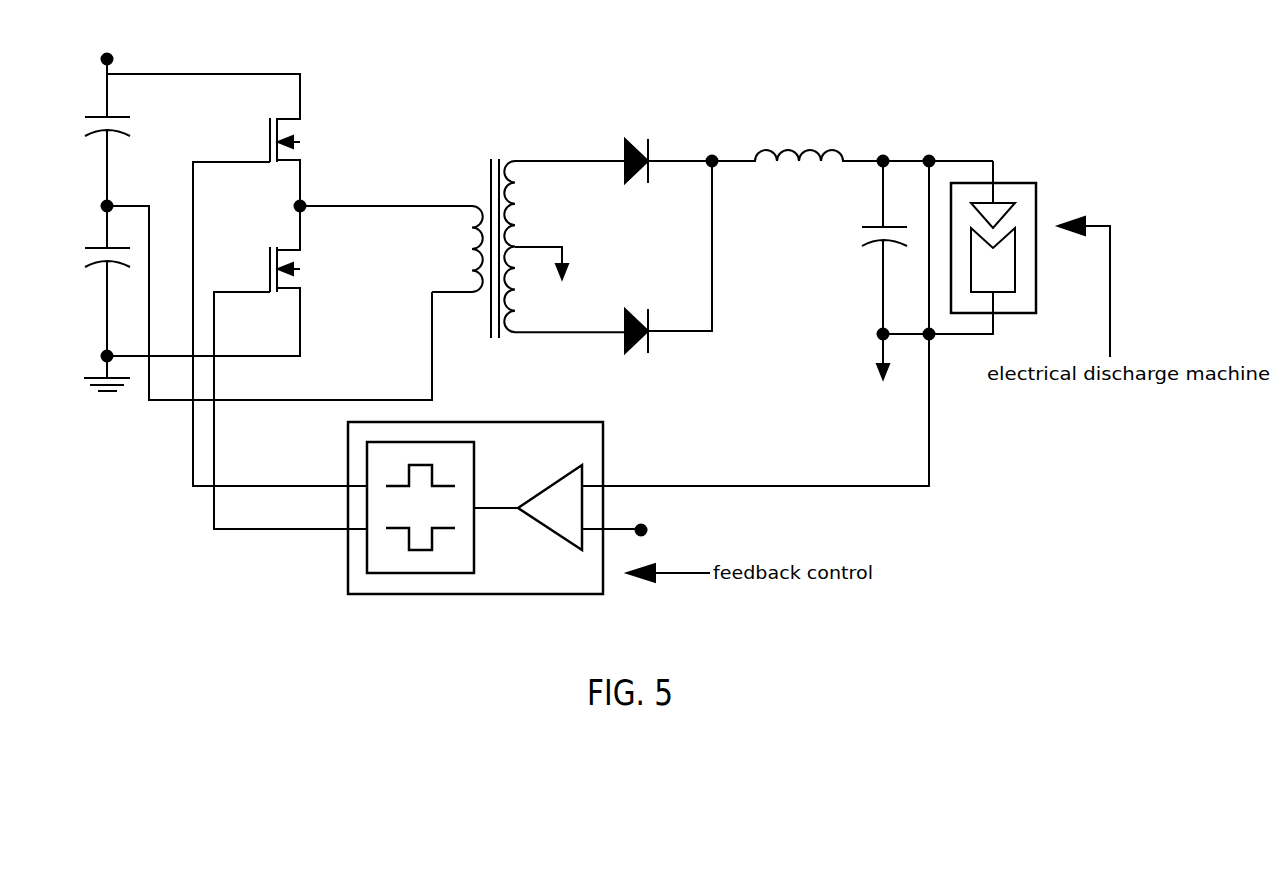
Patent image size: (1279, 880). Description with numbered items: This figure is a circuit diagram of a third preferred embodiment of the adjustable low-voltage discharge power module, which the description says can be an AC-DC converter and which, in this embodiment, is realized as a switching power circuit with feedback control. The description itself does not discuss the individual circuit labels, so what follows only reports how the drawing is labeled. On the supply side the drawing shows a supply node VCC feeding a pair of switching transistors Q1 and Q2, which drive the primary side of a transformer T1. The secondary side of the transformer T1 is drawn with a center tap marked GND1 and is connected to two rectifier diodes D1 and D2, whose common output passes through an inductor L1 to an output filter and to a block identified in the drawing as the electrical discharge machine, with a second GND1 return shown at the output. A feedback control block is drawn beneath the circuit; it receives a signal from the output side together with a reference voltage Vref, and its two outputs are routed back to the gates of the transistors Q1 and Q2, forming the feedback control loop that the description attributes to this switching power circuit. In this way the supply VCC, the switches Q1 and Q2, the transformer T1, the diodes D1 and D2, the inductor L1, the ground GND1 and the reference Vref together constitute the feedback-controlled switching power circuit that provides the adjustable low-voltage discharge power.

The first switching transistor Q1 is at (280, 280).
The second switching transistor Q2 is at (290, 367).
The transformer T1 is at (462, 248).
The first rectifier diode D1 is at (655, 158).
The second rectifier diode D2 is at (655, 257).
The output inductor L1 is at (852, 142).
The supply voltage VCC is at (105, 75).
The secondary ground GND1 is at (709, 327).
The reference voltage Vref is at (637, 528).